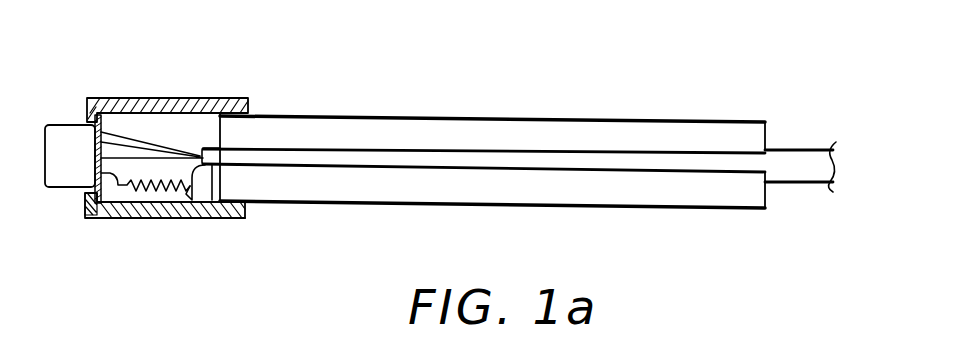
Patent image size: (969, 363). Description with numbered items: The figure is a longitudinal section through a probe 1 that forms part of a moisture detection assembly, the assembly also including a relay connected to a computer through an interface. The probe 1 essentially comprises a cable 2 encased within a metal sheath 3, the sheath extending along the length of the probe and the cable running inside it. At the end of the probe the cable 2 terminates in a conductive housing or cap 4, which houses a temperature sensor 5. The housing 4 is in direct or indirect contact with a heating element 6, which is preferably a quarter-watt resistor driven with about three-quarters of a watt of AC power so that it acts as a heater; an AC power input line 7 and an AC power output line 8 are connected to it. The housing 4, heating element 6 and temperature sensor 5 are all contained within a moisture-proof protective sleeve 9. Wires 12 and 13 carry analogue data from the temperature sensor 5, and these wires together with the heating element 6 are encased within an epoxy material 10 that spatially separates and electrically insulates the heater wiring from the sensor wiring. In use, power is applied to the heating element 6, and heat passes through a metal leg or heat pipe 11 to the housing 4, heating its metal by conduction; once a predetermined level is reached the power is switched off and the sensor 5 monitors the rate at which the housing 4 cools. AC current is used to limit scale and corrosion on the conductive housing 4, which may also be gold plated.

The probe 1 is at (398, 78).
The cable 2 is at (600, 152).
The metal sheath 3 is at (497, 117).
The conductive housing 4 is at (47, 185).
The temperature sensor 5 is at (97, 145).
The heating element 6 is at (153, 207).
The AC power input line 7 is at (196, 204).
The AC power output line 8 is at (120, 192).
The protective sleeve 9 is at (133, 98).
The epoxy material 10 is at (217, 218).
The heat pipe 11 is at (97, 215).
The wire 12 is at (176, 151).
The wire 13 is at (143, 143).